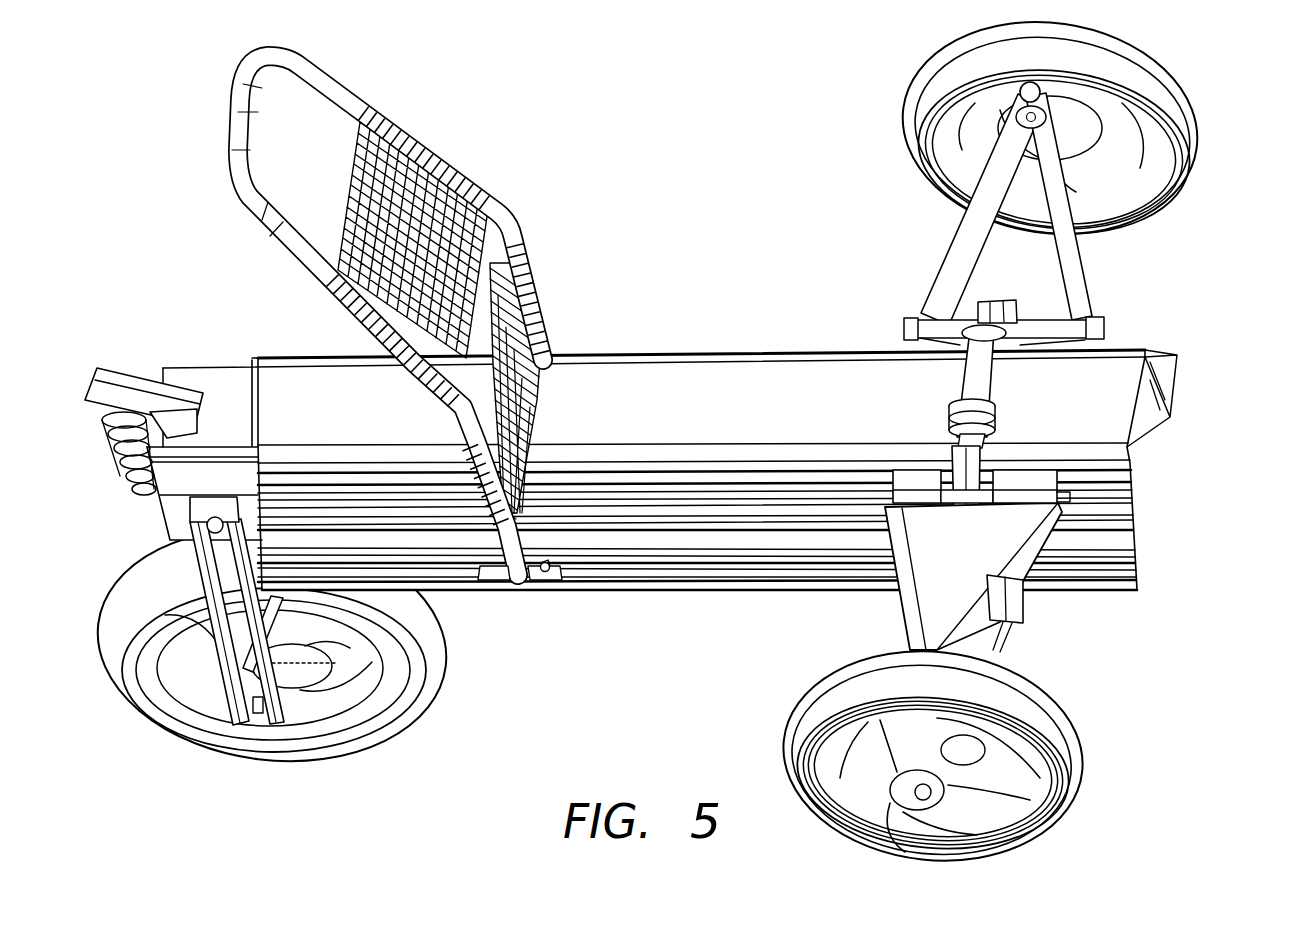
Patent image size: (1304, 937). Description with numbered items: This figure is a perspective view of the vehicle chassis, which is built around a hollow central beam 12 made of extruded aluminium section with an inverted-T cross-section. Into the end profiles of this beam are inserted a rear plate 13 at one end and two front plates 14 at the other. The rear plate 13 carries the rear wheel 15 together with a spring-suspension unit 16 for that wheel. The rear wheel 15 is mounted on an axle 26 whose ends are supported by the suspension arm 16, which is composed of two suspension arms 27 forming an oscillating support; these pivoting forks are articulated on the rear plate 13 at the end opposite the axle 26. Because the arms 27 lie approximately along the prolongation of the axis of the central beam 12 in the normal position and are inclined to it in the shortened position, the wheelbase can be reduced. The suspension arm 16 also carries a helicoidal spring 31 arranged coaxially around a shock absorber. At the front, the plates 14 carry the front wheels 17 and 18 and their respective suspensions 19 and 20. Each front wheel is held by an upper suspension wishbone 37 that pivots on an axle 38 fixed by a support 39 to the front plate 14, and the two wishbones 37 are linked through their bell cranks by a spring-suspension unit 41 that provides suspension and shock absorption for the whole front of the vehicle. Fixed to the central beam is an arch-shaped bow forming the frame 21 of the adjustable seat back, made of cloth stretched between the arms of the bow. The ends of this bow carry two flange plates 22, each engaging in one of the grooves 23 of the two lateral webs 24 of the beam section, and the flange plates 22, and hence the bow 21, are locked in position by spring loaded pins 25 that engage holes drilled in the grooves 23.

The hollow central beam 12 is at (722, 395).
The rear plate 13 is at (216, 364).
The front plates 14 is at (1147, 443).
The rear wheel 15 is at (405, 735).
The spring-suspension unit 16 is at (128, 504).
The front wheel 17 is at (784, 714).
The front wheel 18 is at (1197, 104).
The suspension 19 is at (1032, 611).
The suspension 20 is at (948, 250).
The frame of the adjustable seat back 21 is at (413, 150).
The flange plates 22 is at (498, 577).
The grooves 23 is at (630, 577).
The lateral webs 24 is at (1182, 345).
The spring loaded pins 25 is at (550, 563).
The axle 26 is at (292, 667).
The suspension arms 27 is at (243, 660).
The helicoidal spring 31 is at (126, 458).
The upper suspension wishbone 37 is at (930, 590).
The axle 38 is at (943, 503).
The support 39 is at (913, 483).
The spring-suspension unit 41 is at (981, 380).